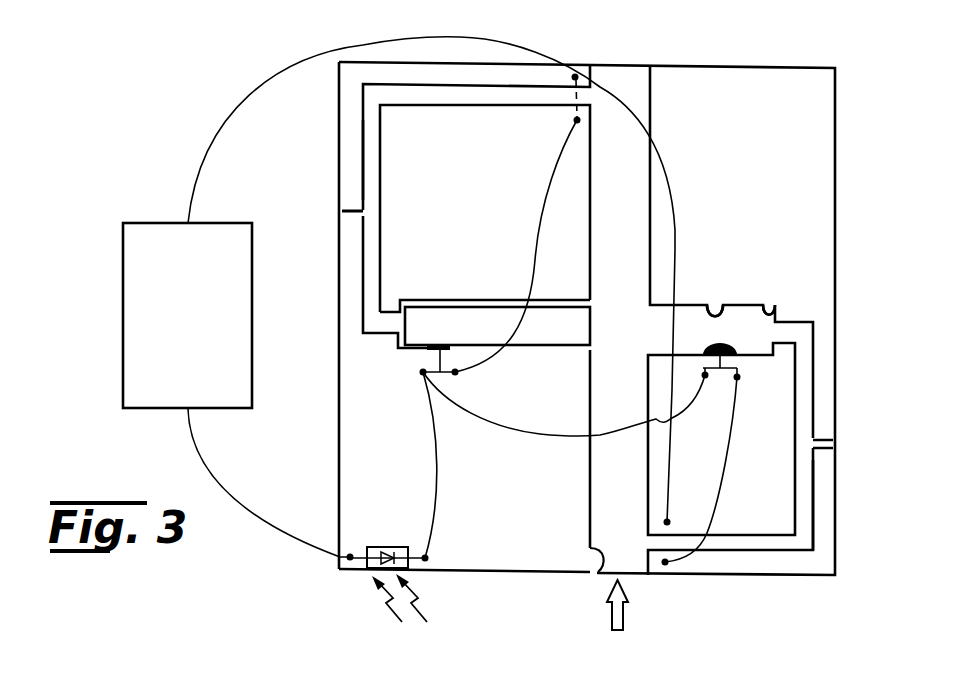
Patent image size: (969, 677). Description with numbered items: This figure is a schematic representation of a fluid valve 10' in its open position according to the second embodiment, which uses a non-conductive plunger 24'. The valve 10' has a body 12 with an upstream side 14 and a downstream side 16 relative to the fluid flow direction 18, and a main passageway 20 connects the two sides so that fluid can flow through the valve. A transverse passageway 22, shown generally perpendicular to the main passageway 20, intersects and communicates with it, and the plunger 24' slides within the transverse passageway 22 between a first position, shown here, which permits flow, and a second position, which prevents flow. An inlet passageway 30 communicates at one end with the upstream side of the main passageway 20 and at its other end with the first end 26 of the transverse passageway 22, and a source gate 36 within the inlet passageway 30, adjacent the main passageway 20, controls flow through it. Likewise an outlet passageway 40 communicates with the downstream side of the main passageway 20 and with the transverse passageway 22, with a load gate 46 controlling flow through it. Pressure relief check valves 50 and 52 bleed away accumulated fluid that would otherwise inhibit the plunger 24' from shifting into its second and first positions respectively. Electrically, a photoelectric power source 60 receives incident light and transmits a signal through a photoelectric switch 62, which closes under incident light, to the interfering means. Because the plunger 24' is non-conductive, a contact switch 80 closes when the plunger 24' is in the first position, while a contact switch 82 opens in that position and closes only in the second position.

The valve 10' is at (500, 324).
The body 12 is at (692, 60).
The upstream side 14 is at (495, 572).
The downstream side 16 is at (793, 67).
The fluid flow direction 18 is at (623, 606).
The main passageway 20 is at (597, 563).
The transverse passageway 22 is at (727, 303).
The non-conductive plunger 24' is at (497, 328).
The first end 26 is at (766, 306).
The inlet passageway 30 is at (810, 484).
The source gate 36 is at (673, 555).
The outlet passageway 40 is at (365, 152).
The load gate 46 is at (575, 113).
The pressure relief check valve 50 is at (827, 438).
The pressure relief check valve 52 is at (348, 216).
The photoelectric power source 60 is at (253, 355).
The photoelectric switch 62 is at (398, 547).
The contact switch 80 is at (432, 360).
The contact switch 82 is at (740, 368).